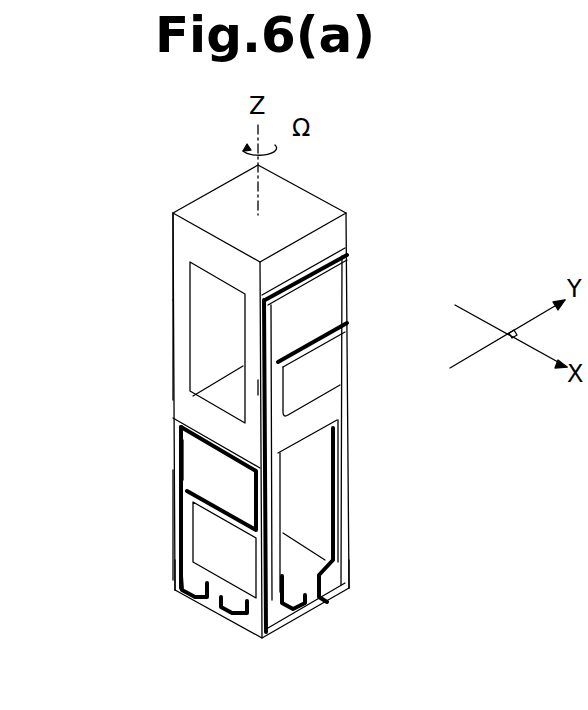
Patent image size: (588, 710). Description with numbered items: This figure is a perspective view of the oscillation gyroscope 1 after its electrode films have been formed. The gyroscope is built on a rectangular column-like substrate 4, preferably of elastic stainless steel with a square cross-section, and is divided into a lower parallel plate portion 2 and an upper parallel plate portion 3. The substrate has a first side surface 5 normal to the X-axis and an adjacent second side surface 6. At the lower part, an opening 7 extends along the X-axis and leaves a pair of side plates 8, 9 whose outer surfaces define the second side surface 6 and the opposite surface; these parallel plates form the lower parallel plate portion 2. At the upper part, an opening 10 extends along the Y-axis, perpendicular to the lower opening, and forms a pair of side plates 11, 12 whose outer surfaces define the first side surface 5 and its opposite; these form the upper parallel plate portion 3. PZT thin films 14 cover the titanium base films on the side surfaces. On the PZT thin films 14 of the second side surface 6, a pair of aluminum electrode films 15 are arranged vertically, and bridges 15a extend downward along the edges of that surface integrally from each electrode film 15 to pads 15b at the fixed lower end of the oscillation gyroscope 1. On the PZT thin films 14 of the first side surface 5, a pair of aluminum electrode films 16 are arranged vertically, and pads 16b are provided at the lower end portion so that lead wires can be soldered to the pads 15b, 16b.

The oscillation gyroscope 1 is at (358, 150).
The lower parallel plate portion 2 is at (120, 500).
The upper parallel plate portion 3 is at (147, 310).
The substrate 4 is at (173, 382).
The first side surface 5 is at (353, 572).
The second side surface 6 is at (175, 578).
The opening 7 is at (312, 498).
The side plate 8 is at (190, 527).
The side plate 9 is at (350, 468).
The opening 10 is at (187, 349).
The side plate 11 is at (255, 388).
The side plate 12 is at (173, 268).
The PZT thin film 14 is at (176, 441).
The electrode film 15 is at (180, 510).
The bridge 15a is at (193, 548).
The pad 15b is at (200, 598).
The electrode film 16 is at (333, 302).
The pad 16b is at (317, 595).